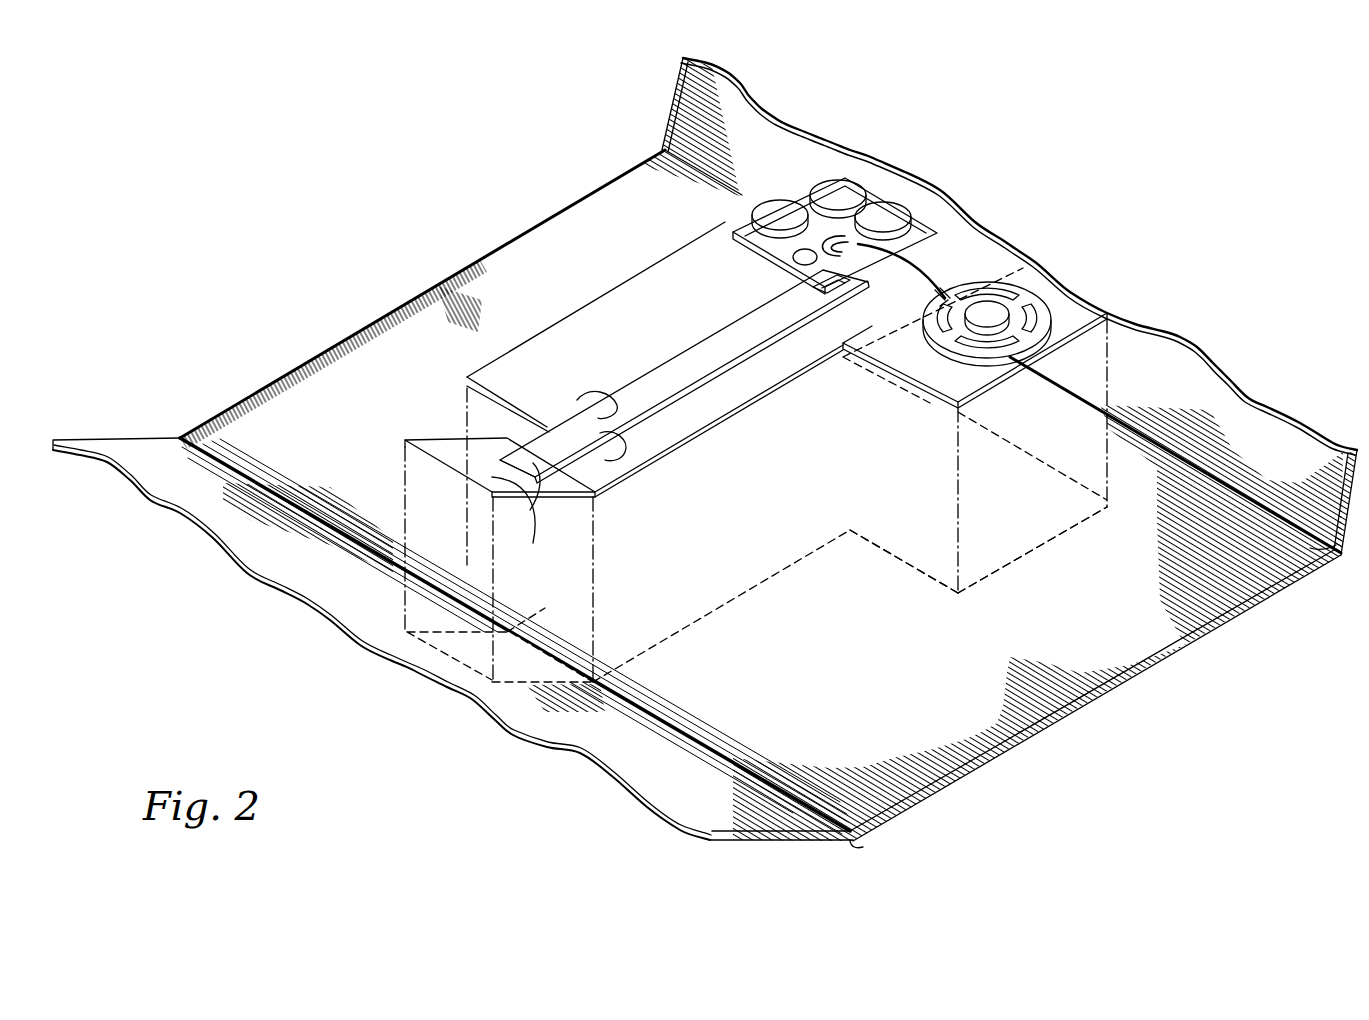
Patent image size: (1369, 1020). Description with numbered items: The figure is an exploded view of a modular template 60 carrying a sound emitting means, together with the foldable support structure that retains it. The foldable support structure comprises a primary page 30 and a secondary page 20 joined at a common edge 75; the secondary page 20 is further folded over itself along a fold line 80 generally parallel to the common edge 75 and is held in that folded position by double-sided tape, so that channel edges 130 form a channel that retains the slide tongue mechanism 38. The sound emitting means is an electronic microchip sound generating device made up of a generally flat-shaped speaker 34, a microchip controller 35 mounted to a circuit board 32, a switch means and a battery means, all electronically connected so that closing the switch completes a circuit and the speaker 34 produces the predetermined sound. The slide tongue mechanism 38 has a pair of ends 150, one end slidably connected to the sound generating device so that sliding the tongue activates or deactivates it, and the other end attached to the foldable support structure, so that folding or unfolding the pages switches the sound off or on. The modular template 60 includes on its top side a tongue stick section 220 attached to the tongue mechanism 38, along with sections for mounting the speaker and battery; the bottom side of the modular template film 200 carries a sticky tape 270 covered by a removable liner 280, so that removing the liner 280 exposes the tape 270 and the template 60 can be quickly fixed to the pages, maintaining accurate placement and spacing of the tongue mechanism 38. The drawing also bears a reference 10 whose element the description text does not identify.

The liner sheet 10 is at (1161, 382).
The secondary page 20 is at (881, 632).
The primary page 30 is at (683, 785).
The circuit board 32 is at (922, 233).
The speaker 34 is at (995, 312).
The microchip controller 35 is at (790, 260).
The slide tongue mechanism 38 is at (680, 357).
The modular template 60 is at (578, 322).
The common edge 75 is at (863, 845).
The fold line 80 is at (1310, 548).
The channel edges 130 is at (885, 220).
The pair of ends 150 is at (538, 457).
The tongue stick section 220 is at (520, 522).
The modular template film 200 is at (773, 512).
The sticky tape 270 is at (1032, 550).
The removable liner 280 is at (904, 561).